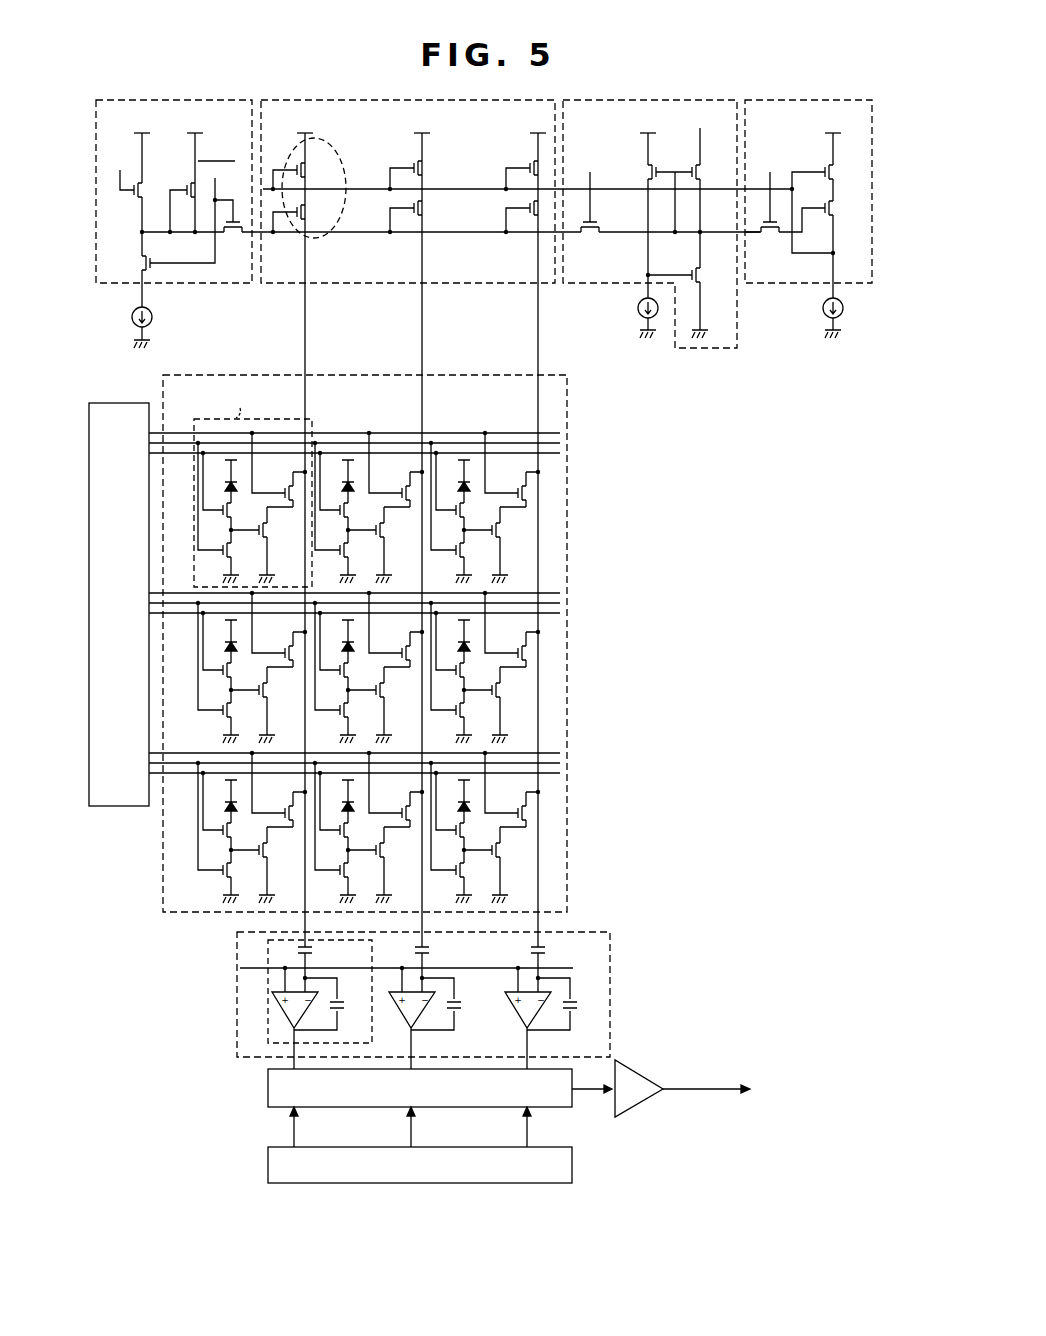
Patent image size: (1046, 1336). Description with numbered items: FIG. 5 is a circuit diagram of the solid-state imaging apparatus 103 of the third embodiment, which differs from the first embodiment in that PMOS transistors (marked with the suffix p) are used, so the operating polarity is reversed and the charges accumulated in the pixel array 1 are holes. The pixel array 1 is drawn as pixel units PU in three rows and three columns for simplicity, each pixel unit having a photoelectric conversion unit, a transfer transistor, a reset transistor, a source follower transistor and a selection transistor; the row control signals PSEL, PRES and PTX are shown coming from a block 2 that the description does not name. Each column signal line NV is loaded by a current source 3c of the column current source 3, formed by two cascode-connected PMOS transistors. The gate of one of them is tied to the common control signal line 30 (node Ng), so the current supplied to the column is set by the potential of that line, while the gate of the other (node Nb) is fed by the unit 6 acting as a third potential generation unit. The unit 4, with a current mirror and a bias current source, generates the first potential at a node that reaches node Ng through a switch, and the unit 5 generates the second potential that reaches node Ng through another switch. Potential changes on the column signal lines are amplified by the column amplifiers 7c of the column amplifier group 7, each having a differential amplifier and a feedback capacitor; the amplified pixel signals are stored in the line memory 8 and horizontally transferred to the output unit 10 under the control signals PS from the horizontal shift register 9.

The pixel array 1 is at (569, 485).
The vertical scanning circuit 2 is at (125, 403).
The column current source 3 is at (310, 100).
The current source 3c is at (322, 152).
The unit 4 is at (184, 100).
The unit 5 is at (632, 100).
The unit 6 is at (799, 100).
The column amplifier group 7 is at (238, 944).
The column amplifier 7c is at (268, 998).
The line memory 8 is at (268, 1086).
The horizontal shift register 9 is at (572, 1160).
The output unit 10 is at (638, 1070).
The control signal line 30 is at (477, 230).
The solid-state imaging apparatus 103 is at (700, 434).